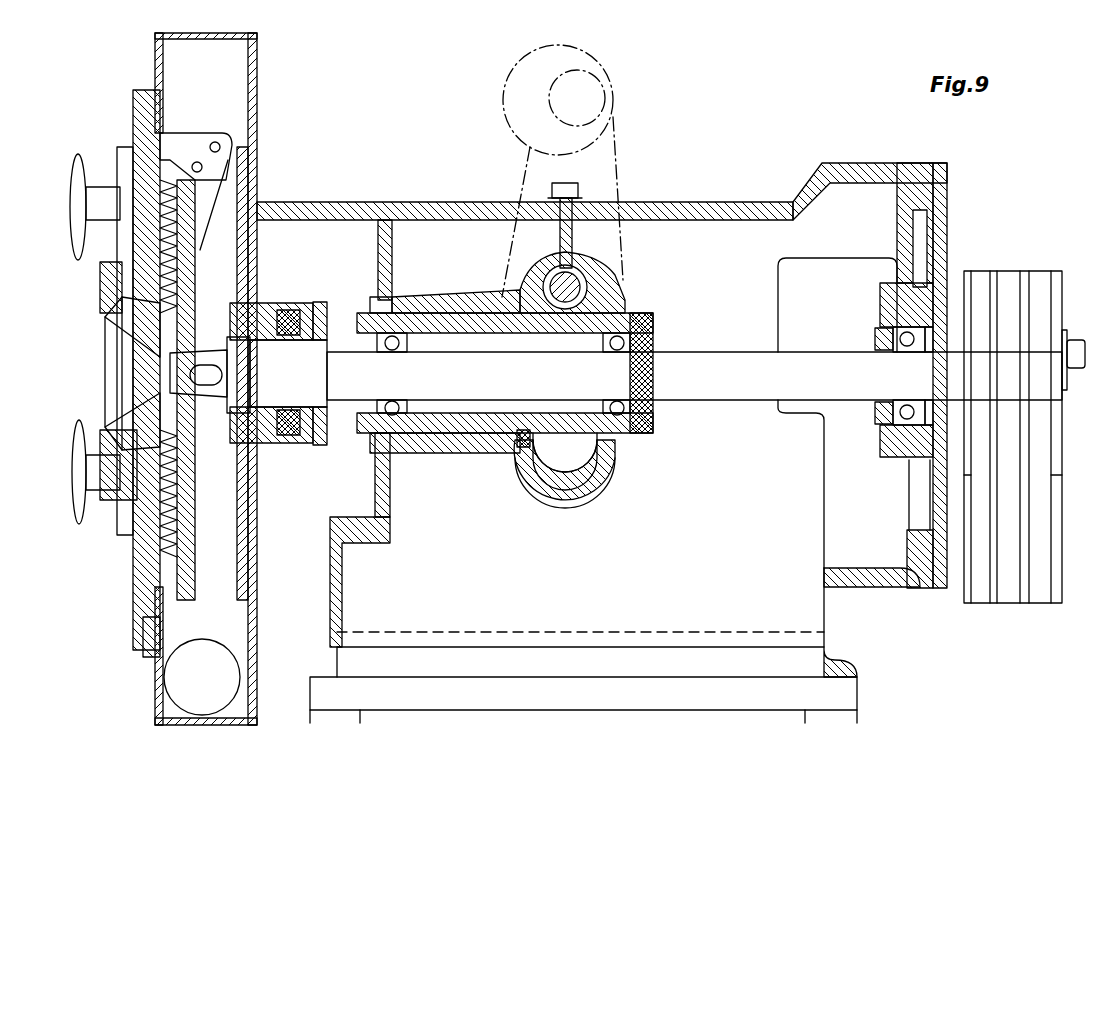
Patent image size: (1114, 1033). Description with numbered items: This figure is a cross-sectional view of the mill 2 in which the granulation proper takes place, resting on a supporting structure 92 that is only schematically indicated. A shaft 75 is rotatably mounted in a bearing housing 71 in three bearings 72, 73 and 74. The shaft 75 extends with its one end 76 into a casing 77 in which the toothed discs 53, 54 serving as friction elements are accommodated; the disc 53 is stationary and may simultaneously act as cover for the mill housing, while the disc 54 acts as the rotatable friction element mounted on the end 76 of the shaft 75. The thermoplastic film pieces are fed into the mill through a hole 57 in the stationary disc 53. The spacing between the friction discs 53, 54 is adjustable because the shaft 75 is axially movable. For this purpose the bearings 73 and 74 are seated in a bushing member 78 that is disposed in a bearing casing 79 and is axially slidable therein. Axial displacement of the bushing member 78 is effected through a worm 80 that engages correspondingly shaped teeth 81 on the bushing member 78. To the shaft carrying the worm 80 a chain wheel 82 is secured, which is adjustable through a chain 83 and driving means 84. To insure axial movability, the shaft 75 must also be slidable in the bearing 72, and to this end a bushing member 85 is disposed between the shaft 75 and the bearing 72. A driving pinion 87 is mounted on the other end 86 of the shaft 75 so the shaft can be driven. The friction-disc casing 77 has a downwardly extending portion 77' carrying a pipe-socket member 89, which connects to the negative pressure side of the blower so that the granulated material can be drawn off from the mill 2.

The mill 2 is at (678, 192).
The stationary disc 53 is at (100, 290).
The rotary disc 54 is at (103, 335).
The hole 57 is at (108, 385).
The bearing housing 71 is at (750, 205).
The bearing 72 is at (890, 460).
The bearing 73 is at (637, 455).
The bearing 74 is at (398, 445).
The shaft 75 is at (737, 385).
The shaft end 76 is at (100, 430).
The casing 77 is at (232, 379).
The downwardly extending portion 77' is at (100, 662).
The bushing member 78 is at (530, 460).
The bearing casing 79 is at (487, 450).
The worm 80 is at (548, 280).
The teeth 81 is at (575, 440).
The chain wheel 82 is at (515, 265).
The chain 83 is at (525, 177).
The driving means 84 is at (595, 90).
The bushing member 85 is at (858, 425).
The shaft end 86 is at (1070, 350).
The driving pinion 87 is at (1012, 270).
The pipe-socket member 89 is at (228, 697).
The supporting structure 92 is at (845, 693).